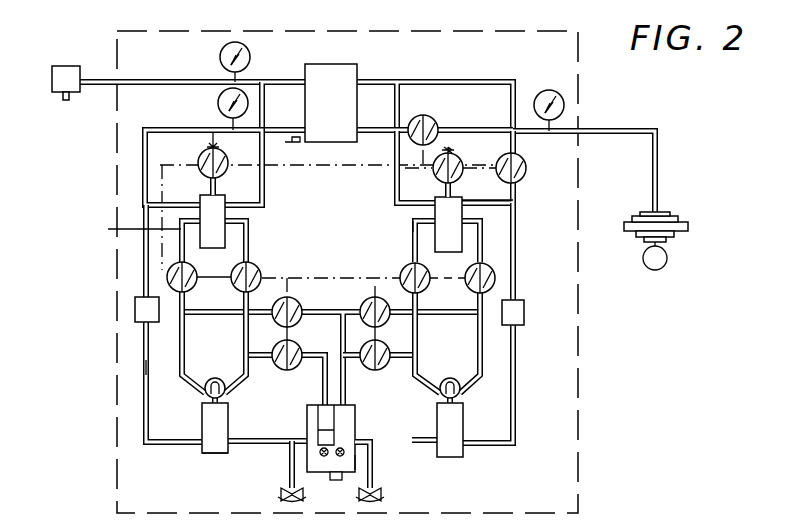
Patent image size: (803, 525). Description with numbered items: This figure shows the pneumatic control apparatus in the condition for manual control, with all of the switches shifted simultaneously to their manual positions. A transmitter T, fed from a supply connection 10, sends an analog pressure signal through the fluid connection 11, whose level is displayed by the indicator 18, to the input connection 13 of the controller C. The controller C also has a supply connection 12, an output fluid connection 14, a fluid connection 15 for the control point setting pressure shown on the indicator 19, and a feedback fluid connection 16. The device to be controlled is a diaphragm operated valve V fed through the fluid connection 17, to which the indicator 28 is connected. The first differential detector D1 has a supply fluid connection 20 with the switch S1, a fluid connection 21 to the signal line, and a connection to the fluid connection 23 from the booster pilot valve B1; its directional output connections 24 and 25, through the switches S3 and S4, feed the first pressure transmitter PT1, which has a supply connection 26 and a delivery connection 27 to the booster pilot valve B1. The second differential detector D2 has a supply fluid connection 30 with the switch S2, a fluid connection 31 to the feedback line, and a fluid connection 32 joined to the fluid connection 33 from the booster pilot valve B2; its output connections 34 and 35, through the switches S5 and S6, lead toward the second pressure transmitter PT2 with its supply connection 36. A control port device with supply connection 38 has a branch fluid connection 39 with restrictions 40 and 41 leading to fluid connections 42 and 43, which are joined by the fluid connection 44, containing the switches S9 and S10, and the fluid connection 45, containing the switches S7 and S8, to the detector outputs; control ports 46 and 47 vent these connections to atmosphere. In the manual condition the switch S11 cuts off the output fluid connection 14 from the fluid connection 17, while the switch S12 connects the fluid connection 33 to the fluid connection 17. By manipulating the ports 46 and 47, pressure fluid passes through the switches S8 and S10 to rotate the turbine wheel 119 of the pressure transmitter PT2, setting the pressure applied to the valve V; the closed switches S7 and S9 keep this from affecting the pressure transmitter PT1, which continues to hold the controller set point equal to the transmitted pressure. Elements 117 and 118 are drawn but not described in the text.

The transmitter T is at (72, 66).
The supply connection 10 is at (60, 96).
The fluid connection 11 is at (138, 80).
The indicator 18 is at (248, 54).
The input connection 13 is at (266, 82).
The controller C is at (330, 64).
The fluid connection 16 is at (378, 80).
The indicator 28 is at (553, 90).
The fluid connection 17 is at (640, 130).
The indicator 19 is at (218, 104).
The fluid connection 15 is at (271, 128).
The switch S1 is at (200, 156).
The fluid connection 20 is at (220, 147).
The supply connection 12 is at (288, 146).
The fluid connection 14 is at (372, 133).
The switch S11 is at (432, 120).
The fluid connection 30 is at (456, 151).
The fluid connection 31 is at (396, 190).
The switch S2 is at (445, 178).
The fluid connection 32 is at (472, 203).
The switch S12 is at (526, 169).
The fluid connection 21 is at (266, 192).
The directional output connection 24 is at (132, 228).
The first differential detector D1 is at (222, 229).
The directional output connection 25 is at (249, 232).
The directional output connection 35 is at (414, 230).
The second differential detector D2 is at (458, 231).
The fluid connection 33 is at (516, 216).
The directional output connection 34 is at (484, 247).
The fluid connection 23 is at (145, 268).
The switch S4 is at (262, 272).
The switch S3 is at (196, 288).
The switch S6 is at (400, 268).
The switch S8 is at (390, 296).
The switch S5 is at (497, 275).
The switch S7 is at (300, 302).
The fluid connection 45 is at (318, 308).
The booster pilot valve B1 is at (135, 310).
The booster pilot valve B2 is at (524, 312).
The fluid connection 44 is at (306, 352).
The fluid delivery connection 27 is at (146, 367).
The turbine wheel 119 is at (222, 378).
The switch S9 is at (292, 368).
The fluid connection 43 is at (354, 364).
The switch S10 is at (392, 366).
The line 117 is at (192, 392).
The line 118 is at (236, 398).
The fluid connection 42 is at (318, 394).
The first pressure transmitter PT1 is at (229, 431).
The second pressure transmitter PT2 is at (464, 425).
The restriction 41 is at (371, 440).
The pressure fluid supply connection 26 is at (232, 454).
The restriction 40 is at (320, 453).
The branch fluid connection 39 is at (357, 463).
The pressure fluid supply connection 36 is at (424, 446).
The control port 46 is at (290, 502).
The pressure fluid supply connection 38 is at (336, 480).
The control port 47 is at (378, 501).
The diaphragm operated valve V is at (656, 241).